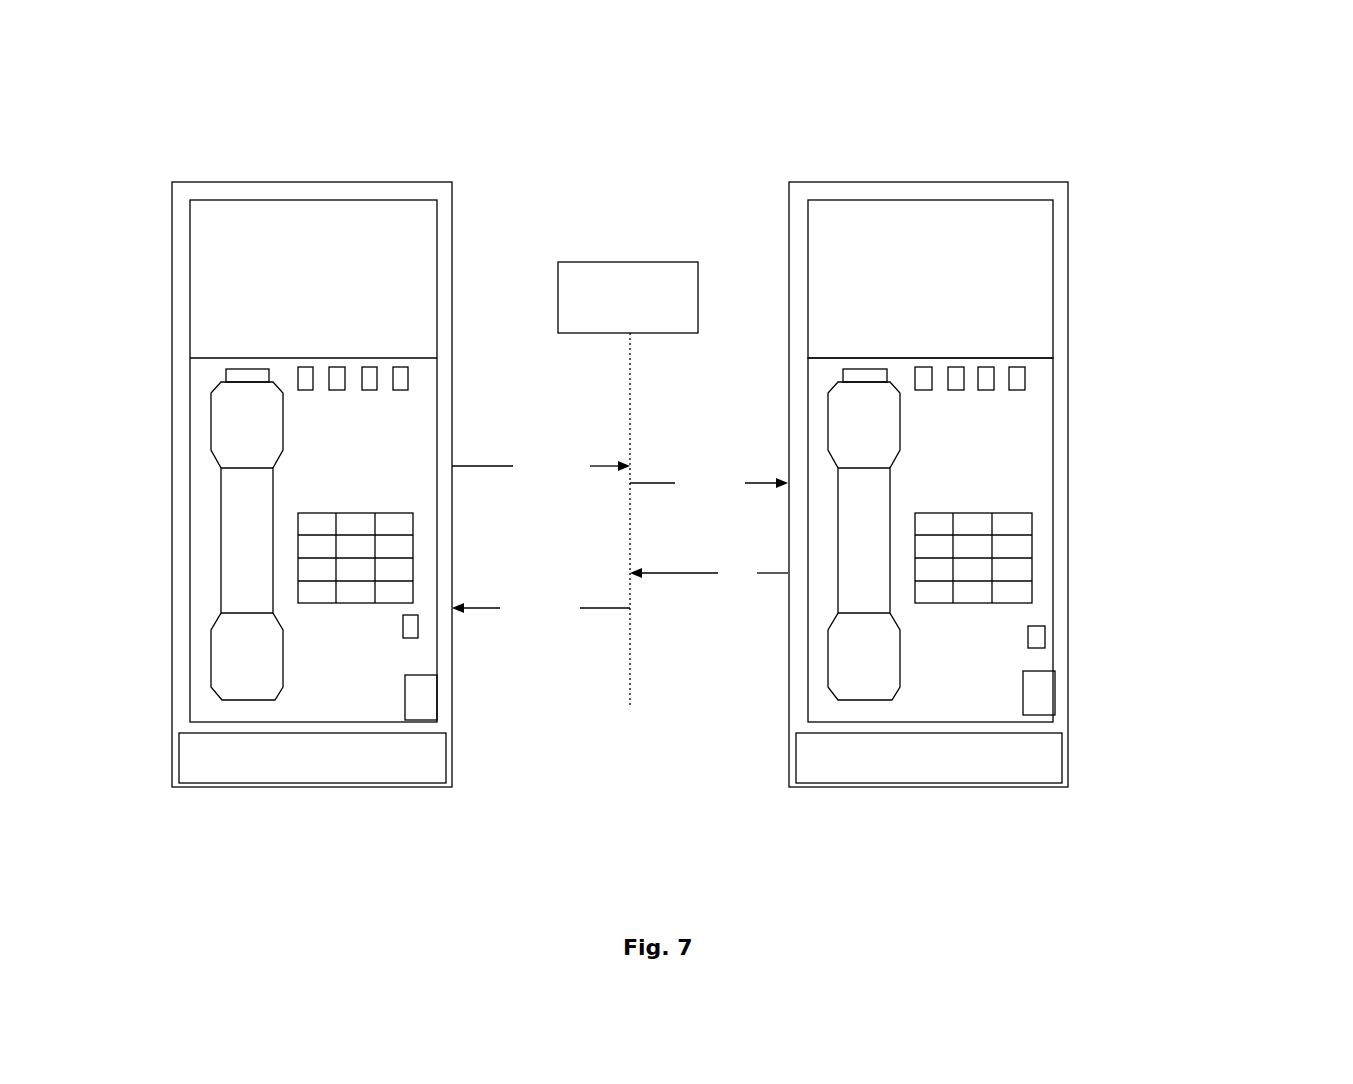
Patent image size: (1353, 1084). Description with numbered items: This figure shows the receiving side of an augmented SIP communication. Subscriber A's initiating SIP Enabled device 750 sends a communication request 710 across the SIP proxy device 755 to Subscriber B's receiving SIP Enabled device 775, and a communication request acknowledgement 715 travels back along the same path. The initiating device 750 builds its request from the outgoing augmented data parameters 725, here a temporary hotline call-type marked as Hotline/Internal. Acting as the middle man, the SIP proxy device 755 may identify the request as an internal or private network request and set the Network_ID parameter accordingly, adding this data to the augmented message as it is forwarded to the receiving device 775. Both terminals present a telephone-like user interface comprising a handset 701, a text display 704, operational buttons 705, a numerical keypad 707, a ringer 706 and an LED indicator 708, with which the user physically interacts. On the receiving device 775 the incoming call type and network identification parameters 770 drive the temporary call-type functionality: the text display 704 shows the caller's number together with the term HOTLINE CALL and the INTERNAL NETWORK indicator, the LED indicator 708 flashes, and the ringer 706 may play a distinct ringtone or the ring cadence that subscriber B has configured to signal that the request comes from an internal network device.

The handset 701 is at (858, 643).
The text display 704 is at (1045, 247).
The operational buttons 705 is at (408, 382).
The ringer 706 is at (428, 697).
The numerical keypad 707 is at (1018, 550).
The LED indicator 708 is at (418, 630).
The communication request 710 is at (620, 476).
The communication request acknowledgement 715 is at (620, 590).
The outgoing augmented data parameters 725 is at (372, 185).
The SIP Enabled device 750 is at (358, 762).
The SIP proxy device 755 is at (628, 483).
The text indicator 770 is at (865, 322).
The SIP Enabled device 775 is at (840, 770).